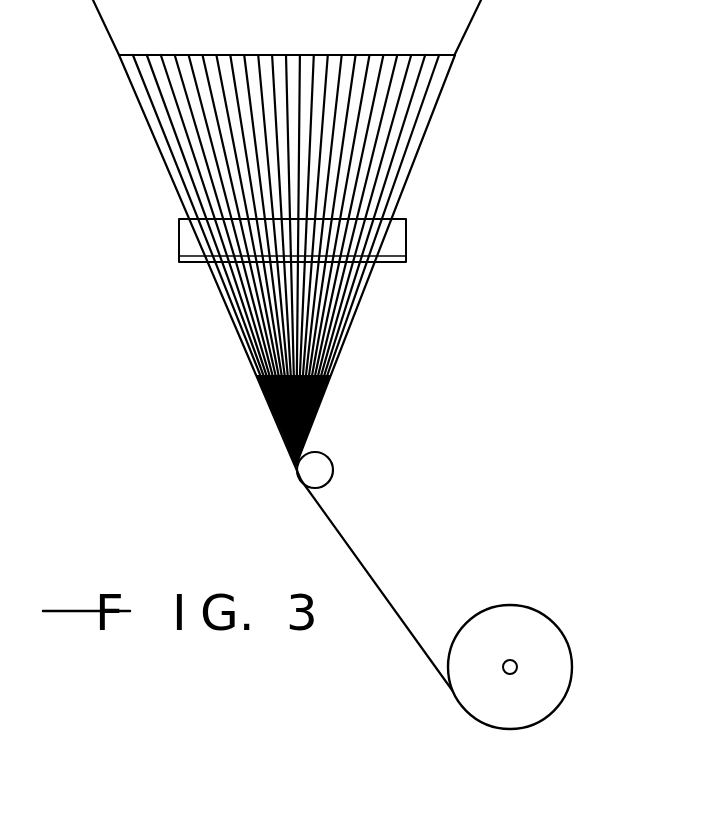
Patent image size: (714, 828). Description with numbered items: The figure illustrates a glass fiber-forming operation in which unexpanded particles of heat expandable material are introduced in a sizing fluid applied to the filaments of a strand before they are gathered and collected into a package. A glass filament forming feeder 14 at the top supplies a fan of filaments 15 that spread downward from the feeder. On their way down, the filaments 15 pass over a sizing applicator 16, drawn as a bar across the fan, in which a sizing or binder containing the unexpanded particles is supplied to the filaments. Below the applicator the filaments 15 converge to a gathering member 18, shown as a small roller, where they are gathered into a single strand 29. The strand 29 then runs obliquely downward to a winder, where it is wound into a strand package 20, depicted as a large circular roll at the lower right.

The glass filament forming feeder 14 is at (455, 52).
The filaments 15 is at (423, 143).
The sizing applicator 16 is at (178, 243).
The gathering member 18 is at (335, 458).
The strand 29 is at (377, 580).
The strand package 20 is at (540, 608).